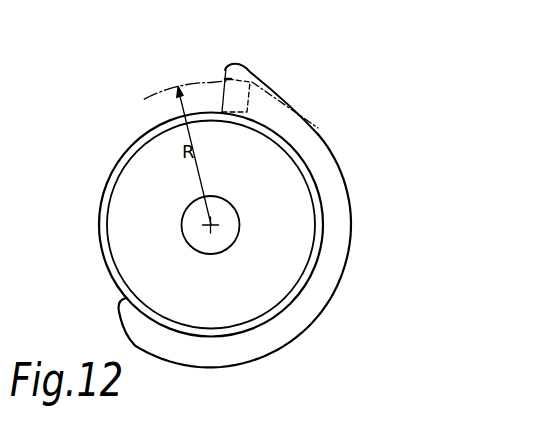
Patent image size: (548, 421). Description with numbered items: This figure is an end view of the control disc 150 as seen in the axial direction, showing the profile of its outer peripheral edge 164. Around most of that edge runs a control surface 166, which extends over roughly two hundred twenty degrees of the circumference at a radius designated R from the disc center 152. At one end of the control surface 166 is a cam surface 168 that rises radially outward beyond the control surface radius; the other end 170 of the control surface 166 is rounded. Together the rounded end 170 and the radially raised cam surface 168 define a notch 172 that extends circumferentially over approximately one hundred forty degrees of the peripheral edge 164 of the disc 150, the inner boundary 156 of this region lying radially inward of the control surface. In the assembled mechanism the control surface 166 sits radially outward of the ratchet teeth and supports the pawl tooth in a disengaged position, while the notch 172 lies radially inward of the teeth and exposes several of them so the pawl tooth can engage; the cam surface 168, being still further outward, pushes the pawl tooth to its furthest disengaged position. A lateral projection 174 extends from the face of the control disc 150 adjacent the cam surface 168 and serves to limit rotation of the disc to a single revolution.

The control disc 150 is at (124, 159).
The roller axis 152 is at (231, 214).
The inner surface of roller 156 is at (273, 313).
The outer peripheral edge 164 is at (193, 367).
The control surface 166 is at (350, 256).
The cam surface 168 is at (262, 84).
The other end of the control surface 170 is at (118, 311).
The notch 172 is at (99, 233).
The lateral projection 174 is at (235, 92).